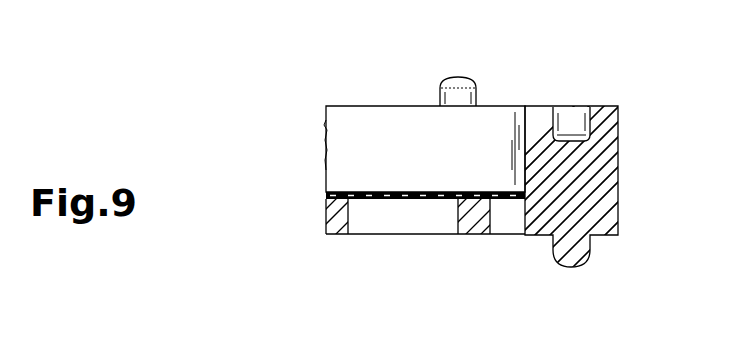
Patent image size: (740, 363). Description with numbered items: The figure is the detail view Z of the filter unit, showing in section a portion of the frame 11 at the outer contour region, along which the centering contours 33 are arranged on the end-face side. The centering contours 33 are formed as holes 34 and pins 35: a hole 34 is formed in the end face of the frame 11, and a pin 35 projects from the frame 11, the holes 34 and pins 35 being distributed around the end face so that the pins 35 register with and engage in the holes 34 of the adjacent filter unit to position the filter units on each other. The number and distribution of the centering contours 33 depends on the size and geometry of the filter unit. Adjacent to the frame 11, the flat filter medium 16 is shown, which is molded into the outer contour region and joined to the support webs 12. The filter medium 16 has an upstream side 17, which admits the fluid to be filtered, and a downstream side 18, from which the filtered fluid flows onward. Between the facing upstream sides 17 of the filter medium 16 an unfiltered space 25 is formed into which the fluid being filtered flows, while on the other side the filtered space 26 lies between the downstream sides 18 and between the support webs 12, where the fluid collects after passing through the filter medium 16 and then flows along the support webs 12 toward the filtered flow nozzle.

The frame 11 is at (607, 167).
The support webs 12 is at (329, 236).
The filter medium 16 is at (420, 200).
The upstream side 17 is at (440, 186).
The downstream side 18 is at (404, 207).
The unfiltered space 25 is at (351, 142).
The filtered space 26 is at (376, 229).
The centering contours 33 is at (465, 66).
The holes 34 is at (572, 107).
The pins 35 is at (447, 82).